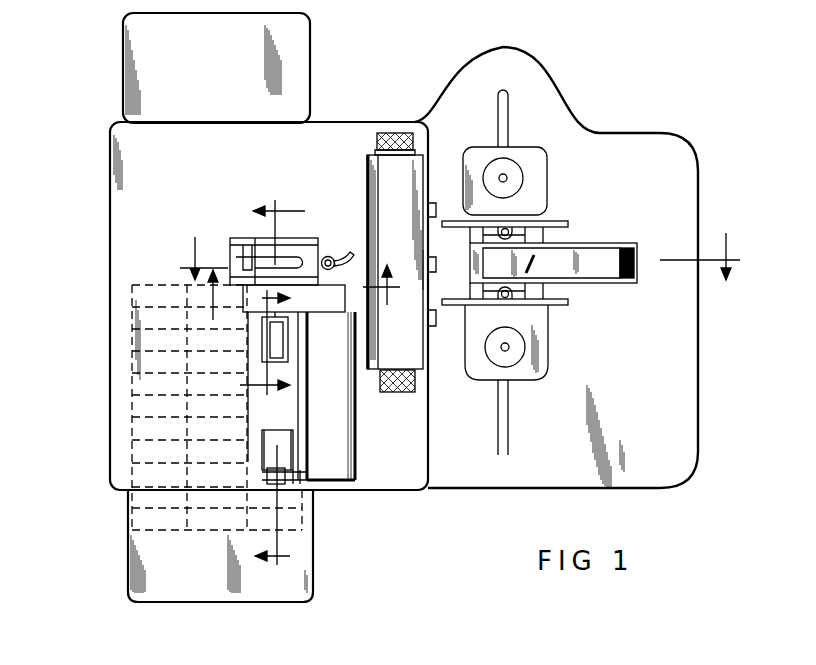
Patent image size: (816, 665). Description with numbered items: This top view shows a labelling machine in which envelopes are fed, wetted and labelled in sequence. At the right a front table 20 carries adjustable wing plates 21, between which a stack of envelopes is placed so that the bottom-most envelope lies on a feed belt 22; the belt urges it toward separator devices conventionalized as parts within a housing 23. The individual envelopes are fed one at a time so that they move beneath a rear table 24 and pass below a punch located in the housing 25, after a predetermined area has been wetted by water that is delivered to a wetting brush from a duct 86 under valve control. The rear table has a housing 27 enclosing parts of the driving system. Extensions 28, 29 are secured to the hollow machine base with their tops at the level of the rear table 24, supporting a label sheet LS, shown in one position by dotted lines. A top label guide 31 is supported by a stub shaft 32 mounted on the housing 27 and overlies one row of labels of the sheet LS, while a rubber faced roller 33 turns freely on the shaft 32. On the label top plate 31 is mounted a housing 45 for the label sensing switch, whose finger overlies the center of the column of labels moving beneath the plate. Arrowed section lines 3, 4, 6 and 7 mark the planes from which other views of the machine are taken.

The front table 20 is at (616, 143).
The adjustable wing plates 21 is at (565, 222).
The feed belt 22 is at (600, 253).
The housing 23 is at (401, 262).
The rear table 24 is at (333, 133).
The housing 25 is at (300, 238).
The housing 27 is at (310, 305).
The extension 28 is at (220, 546).
The extension 29 is at (216, 68).
The top label guide 31 is at (283, 407).
The stub shaft 32 is at (283, 490).
The rubber faced roller 33 is at (280, 492).
The housing 45 is at (285, 353).
The duct 86 is at (346, 254).
The section line 3 is at (285, 383).
The section line 4 is at (460, 246).
The section line 6 is at (303, 299).
The section line 7 is at (255, 342).
The label sheet LS is at (137, 412).